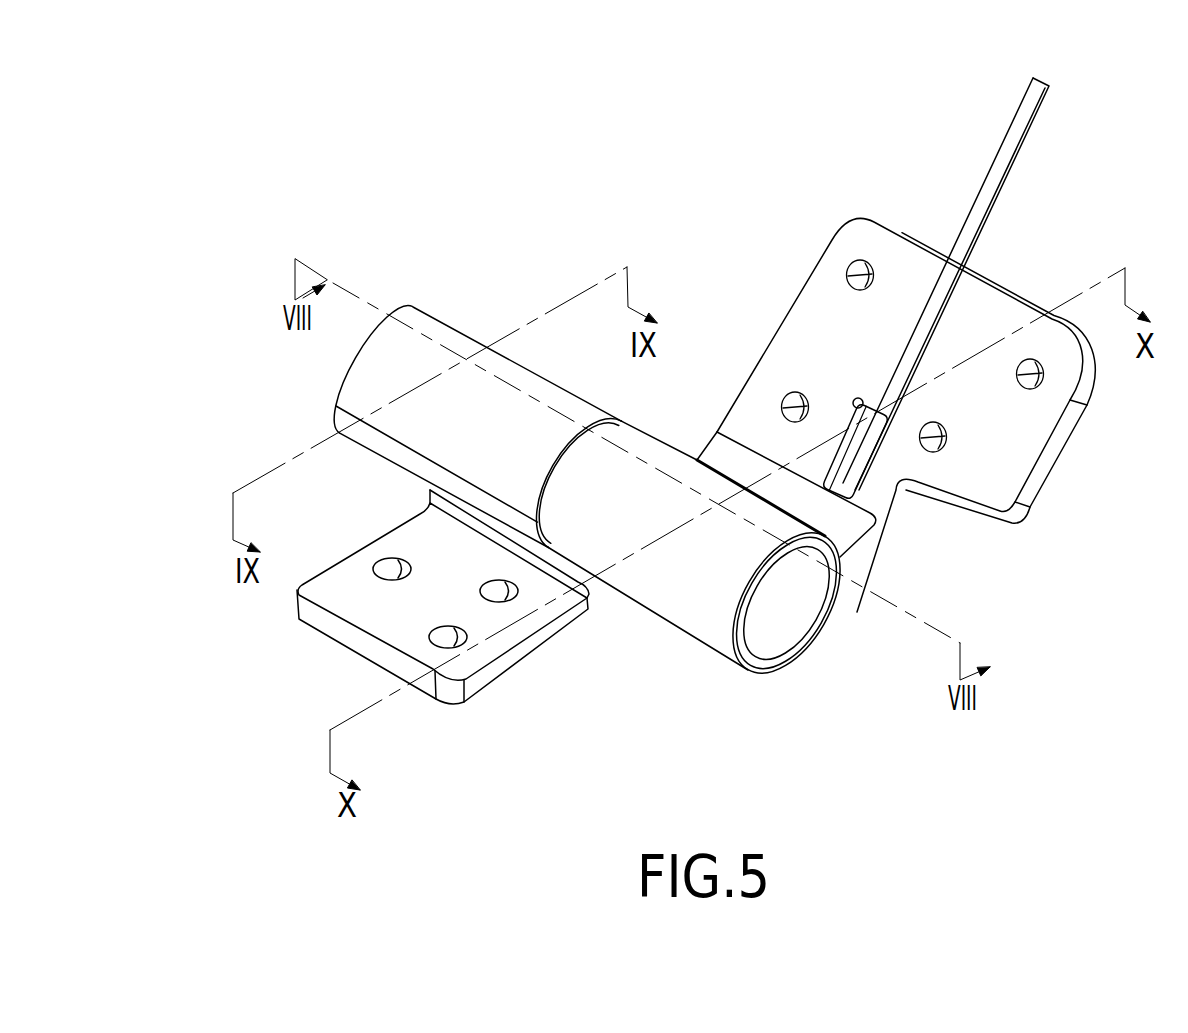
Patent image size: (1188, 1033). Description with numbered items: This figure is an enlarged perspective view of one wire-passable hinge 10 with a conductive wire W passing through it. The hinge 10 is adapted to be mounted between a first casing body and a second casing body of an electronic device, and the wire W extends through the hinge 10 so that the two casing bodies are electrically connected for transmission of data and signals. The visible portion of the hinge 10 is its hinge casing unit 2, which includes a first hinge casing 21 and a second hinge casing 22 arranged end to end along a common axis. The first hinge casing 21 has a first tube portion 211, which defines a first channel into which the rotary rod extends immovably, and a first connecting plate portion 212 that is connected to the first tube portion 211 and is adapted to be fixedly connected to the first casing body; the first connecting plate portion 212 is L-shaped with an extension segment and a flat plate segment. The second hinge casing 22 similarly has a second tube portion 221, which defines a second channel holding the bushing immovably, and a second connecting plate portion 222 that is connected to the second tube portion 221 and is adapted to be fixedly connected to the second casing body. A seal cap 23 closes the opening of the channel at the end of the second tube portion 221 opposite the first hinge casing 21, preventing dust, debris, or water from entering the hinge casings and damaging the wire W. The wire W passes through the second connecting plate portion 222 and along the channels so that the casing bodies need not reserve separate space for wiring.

The wire-passable hinge 10 is at (592, 203).
The hinge casing unit 2 is at (757, 693).
The first hinge casing 21 is at (342, 373).
The first tube portion 211 is at (450, 337).
The first connecting plate portion 212 is at (343, 645).
The second hinge casing 22 is at (800, 660).
The second tube portion 221 is at (682, 598).
The second connecting plate portion 222 is at (797, 307).
The seal cap 23 is at (792, 618).
The conductive wire W is at (998, 150).